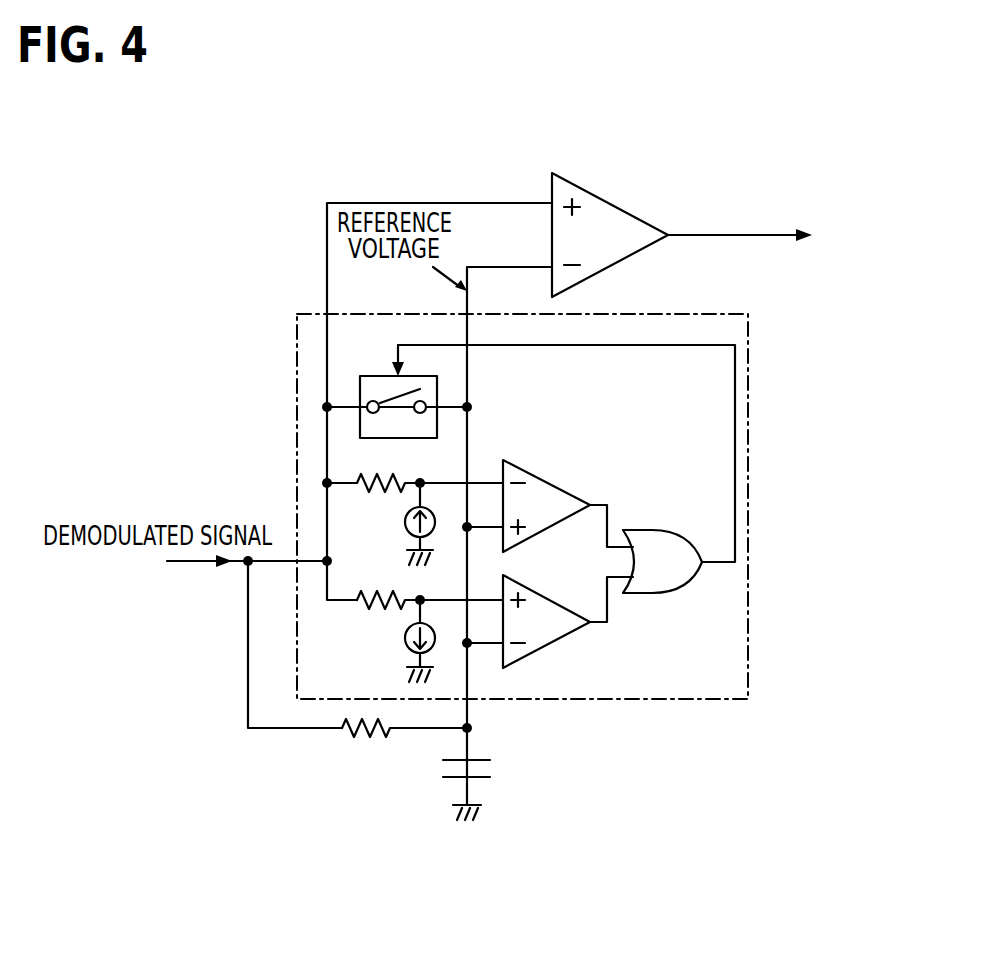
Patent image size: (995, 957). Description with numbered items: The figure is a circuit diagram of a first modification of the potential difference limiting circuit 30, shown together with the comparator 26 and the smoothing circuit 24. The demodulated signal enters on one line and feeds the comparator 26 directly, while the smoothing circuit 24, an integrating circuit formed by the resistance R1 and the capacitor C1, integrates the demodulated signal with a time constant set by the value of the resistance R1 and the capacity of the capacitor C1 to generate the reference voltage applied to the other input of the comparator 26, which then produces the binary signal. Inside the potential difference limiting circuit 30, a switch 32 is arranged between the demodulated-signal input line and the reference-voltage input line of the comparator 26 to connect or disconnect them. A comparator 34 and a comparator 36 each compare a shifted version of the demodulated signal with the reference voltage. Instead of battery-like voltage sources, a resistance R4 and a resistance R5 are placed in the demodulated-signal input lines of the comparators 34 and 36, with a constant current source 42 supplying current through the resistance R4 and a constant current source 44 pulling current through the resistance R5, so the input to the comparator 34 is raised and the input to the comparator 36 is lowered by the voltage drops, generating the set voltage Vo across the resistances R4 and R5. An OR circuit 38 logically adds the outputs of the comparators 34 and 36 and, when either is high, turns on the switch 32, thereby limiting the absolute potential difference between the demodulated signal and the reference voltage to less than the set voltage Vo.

The smoothing circuit 24 is at (406, 791).
The comparator 26 is at (618, 213).
The potential difference limiting circuit 30 is at (297, 361).
The switch 32 is at (378, 375).
The comparator 34 is at (543, 482).
The comparator 36 is at (543, 598).
The OR circuit 38 is at (652, 530).
The constant current source 42 is at (405, 522).
The constant current source 44 is at (405, 638).
The resistance R1 is at (361, 743).
The resistance R4 is at (384, 470).
The resistance R5 is at (384, 587).
The capacitor C1 is at (442, 768).